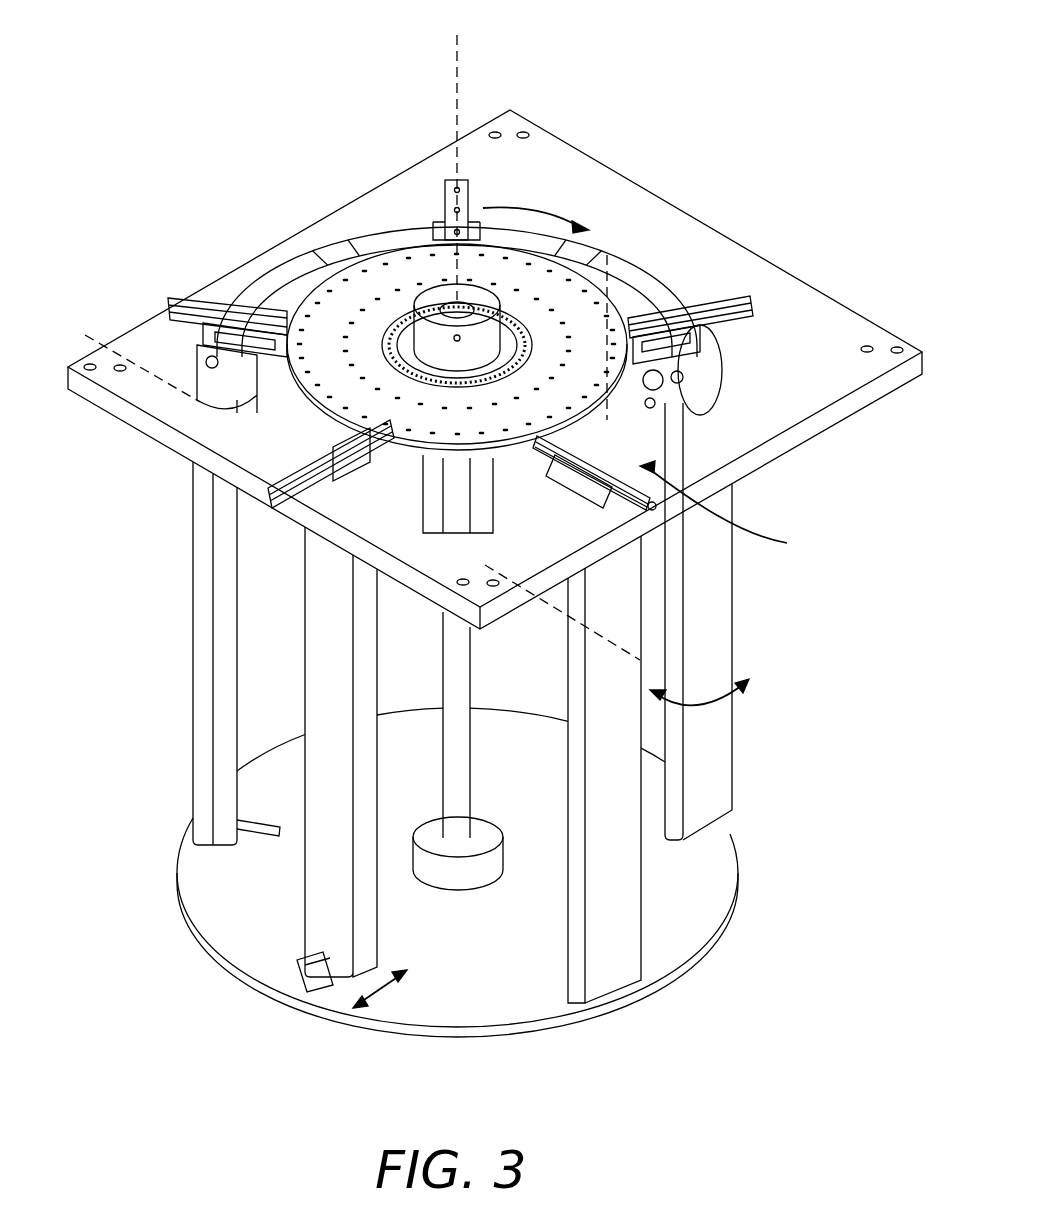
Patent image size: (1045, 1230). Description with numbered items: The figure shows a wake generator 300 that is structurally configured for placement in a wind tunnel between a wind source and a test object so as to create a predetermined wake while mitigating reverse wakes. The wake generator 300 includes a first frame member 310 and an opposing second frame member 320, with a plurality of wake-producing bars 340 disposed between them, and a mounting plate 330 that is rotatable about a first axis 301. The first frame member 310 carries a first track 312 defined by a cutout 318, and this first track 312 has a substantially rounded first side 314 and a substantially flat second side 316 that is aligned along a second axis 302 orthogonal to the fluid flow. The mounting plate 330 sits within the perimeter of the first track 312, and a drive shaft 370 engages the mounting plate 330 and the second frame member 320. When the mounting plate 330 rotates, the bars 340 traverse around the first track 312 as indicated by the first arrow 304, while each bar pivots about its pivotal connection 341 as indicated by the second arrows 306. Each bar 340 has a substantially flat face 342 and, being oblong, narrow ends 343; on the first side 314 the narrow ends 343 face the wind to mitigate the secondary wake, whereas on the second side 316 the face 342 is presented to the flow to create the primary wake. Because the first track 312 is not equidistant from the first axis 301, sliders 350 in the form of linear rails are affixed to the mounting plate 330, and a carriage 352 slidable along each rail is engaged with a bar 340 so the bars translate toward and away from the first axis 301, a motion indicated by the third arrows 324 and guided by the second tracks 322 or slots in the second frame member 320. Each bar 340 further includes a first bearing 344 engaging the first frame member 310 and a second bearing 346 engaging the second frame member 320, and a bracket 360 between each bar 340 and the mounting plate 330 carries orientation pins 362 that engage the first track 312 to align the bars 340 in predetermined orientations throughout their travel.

The wake generator 300 is at (131, 137).
The first axis 301 is at (462, 60).
The second axis 302 is at (80, 333).
The first arrow 304 is at (522, 206).
The second arrows 306 is at (732, 702).
The first frame member 310 is at (631, 257).
The first track 312 is at (586, 262).
The first side 314 is at (640, 257).
The second side 316 is at (193, 420).
The cutout 318 is at (743, 510).
The second frame member 320 is at (226, 940).
The second track 322 is at (288, 986).
The third arrows 324 is at (392, 1000).
The mounting plate 330 is at (344, 306).
The bars 340 is at (193, 642).
The pivotal connection 341 is at (717, 333).
The face 342 is at (623, 893).
The narrow ends 343 is at (580, 913).
The first bearing 344 is at (722, 368).
The second bearing 346 is at (327, 963).
The sliders 350 is at (660, 500).
The carriage 352 is at (240, 305).
The bracket 360 is at (715, 388).
The orientation pins 362 is at (700, 427).
The drive shaft 370 is at (460, 762).